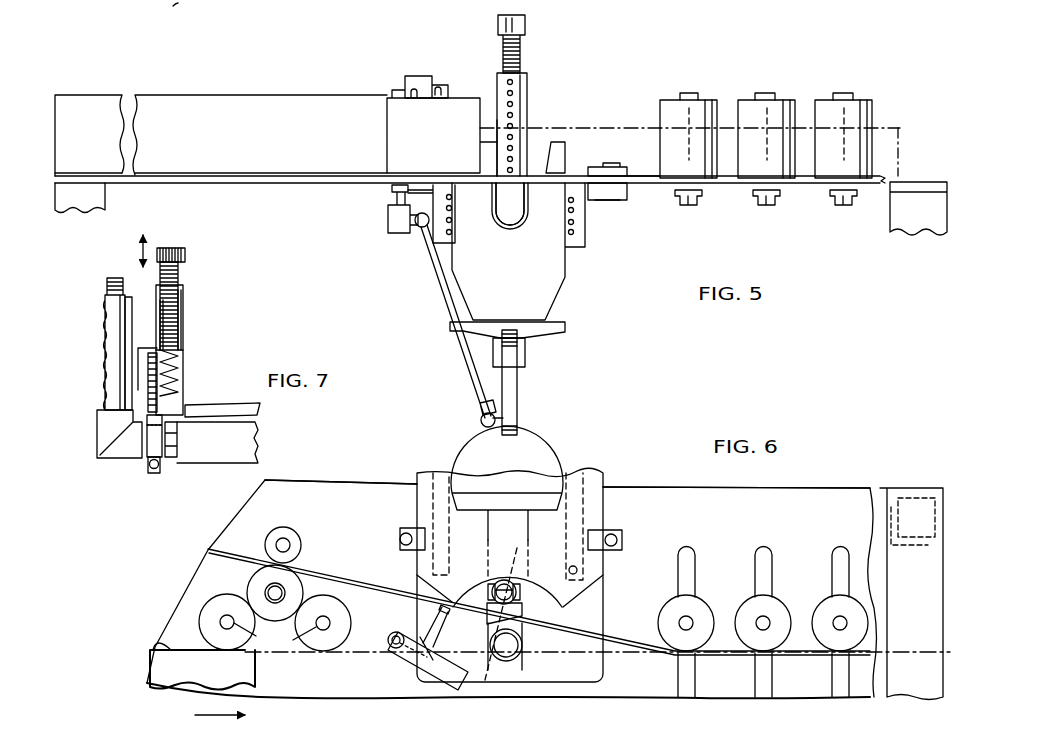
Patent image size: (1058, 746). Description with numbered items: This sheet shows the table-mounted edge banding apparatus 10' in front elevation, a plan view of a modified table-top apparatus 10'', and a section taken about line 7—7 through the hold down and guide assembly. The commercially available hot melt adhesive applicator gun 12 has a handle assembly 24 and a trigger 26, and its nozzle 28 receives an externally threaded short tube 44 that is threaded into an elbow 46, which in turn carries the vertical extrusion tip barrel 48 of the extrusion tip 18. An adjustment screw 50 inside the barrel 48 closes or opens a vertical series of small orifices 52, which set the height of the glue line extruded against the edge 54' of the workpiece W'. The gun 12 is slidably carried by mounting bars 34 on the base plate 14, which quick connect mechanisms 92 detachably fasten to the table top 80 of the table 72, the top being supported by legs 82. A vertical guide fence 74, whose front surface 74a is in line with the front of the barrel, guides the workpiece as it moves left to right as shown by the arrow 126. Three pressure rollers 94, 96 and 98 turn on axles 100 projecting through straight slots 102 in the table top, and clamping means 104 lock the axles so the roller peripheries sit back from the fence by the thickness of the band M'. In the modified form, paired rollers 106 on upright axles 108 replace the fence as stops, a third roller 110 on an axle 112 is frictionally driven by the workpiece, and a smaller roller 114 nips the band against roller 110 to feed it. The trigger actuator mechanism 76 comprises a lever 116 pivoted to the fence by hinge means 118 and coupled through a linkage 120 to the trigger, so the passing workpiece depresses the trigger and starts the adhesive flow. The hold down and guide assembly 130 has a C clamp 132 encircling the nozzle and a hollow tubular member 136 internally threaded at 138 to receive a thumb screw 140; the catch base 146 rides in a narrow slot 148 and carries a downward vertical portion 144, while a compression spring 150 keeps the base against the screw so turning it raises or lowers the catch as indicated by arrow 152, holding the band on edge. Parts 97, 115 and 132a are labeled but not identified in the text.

In FIG. 5, the table-mounted edge banding apparatus 10' is at (690, 107).
In FIG. 6, the web handling apparatus (third embodiment) 10'' is at (736, 465).
In FIG. 5, the hot melt adhesive applicator gun 12 is at (570, 298).
In FIG. 6, the hot melt adhesive applicator gun 12 is at (541, 470).
In FIG. 5, the base plate 14 is at (548, 172).
In FIG. 5, the extrusion tip 18 is at (536, 72).
In FIG. 6, the extrusion tip 18 is at (528, 657).
In FIG. 5, the handle assembly 24 is at (526, 343).
In FIG. 5, the trigger 26 is at (514, 402).
In FIG. 7, the gun nozzle 28 is at (248, 442).
In FIG. 6, the gun nozzle 28 is at (517, 522).
In FIG. 5, the mounting brackets or bars 34 is at (452, 242).
In FIG. 7, the externally threaded short-length tube 44 is at (177, 438).
In FIG. 5, the elbow 46 is at (527, 225).
In FIG. 5, the extrusion tip barrel 48 is at (526, 118).
In FIG. 5, the adjustment screw 50 is at (522, 57).
In FIG. 5, the orifices 52 is at (514, 113).
In FIG. 7, the orifices 52 is at (105, 345).
In FIG. 6, the workpiece edge 54' is at (144, 647).
In FIG. 5, the table 72 is at (361, 189).
In FIG. 6, the table 72 is at (346, 481).
In FIG. 5, the vertical guide fence 74 is at (278, 94).
In FIG. 5, the fence front surface 74a is at (282, 147).
In FIG. 5, the trigger actuator mechanism 76 is at (459, 95).
In FIG. 5, the table top 80 is at (634, 183).
In FIG. 6, the table top 80 is at (383, 488).
In FIG. 5, the legs 82 is at (80, 193).
In FIG. 6, the legs 82 is at (916, 490).
In FIG. 5, the quick connect mechanisms 92 is at (600, 167).
In FIG. 6, the quick connect mechanisms 92 is at (624, 536).
In FIG. 5, the pressure roller 94 is at (668, 112).
In FIG. 6, the pressure roller 94 is at (700, 610).
In FIG. 5, the pressure roller 96 is at (748, 113).
In FIG. 6, the pressure roller 96 is at (776, 610).
In FIG. 5, the pin base 97 is at (610, 194).
In FIG. 5, the pressure roller 98 is at (824, 115).
In FIG. 6, the pressure roller 98 is at (858, 617).
In FIG. 5, the axles 100 is at (698, 93).
In FIG. 6, the slots 102 is at (757, 548).
In FIG. 5, the clamping means 104 is at (700, 203).
In FIG. 6, the paired rollers 106 is at (210, 610).
In FIG. 6, the upright axles 108 is at (318, 626).
In FIG. 6, the third roller 110 is at (294, 582).
In FIG. 6, the vertical upright axle 112 is at (272, 592).
In FIG. 6, the fourth smaller diameter roller 114 is at (279, 527).
In FIG. 6, the roller hub 115 is at (291, 533).
In FIG. 5, the pivotable lever 116 is at (412, 117).
In FIG. 6, the pivotable lever 116 is at (452, 684).
In FIG. 6, the hinge means 118 is at (396, 656).
In FIG. 5, the linkage 120 is at (432, 260).
In FIG. 6, the linkage 120 is at (445, 630).
In FIG. 5, the workpiece movement arrow 126 is at (180, 4).
In FIG. 6, the workpiece movement arrow 126 is at (243, 714).
In FIG. 7, the hold down and guide assembly 130 is at (192, 338).
In FIG. 6, the hold down and guide assembly 130 is at (528, 607).
In FIG. 7, the C clamp 132 is at (146, 447).
In FIG. 7, the stem pin 132a is at (154, 470).
In FIG. 7, the hollow tubular member 136 is at (186, 323).
In FIG. 7, the internal threads 138 is at (184, 312).
In FIG. 7, the thumb screw 140 is at (184, 266).
In FIG. 7, the vertical portion 144 is at (147, 365).
In FIG. 7, the base 146 is at (150, 350).
In FIG. 7, the narrow slot 148 is at (157, 302).
In FIG. 7, the compression spring 150 is at (186, 358).
In FIG. 7, the adjustment arrow 152 is at (140, 249).
In FIG. 7, the band M' is at (106, 433).
In FIG. 6, the band M' is at (522, 593).
In FIG. 6, the workpiece W' is at (491, 674).
In FIG. 6, the section line 7— 7 is at (515, 547).